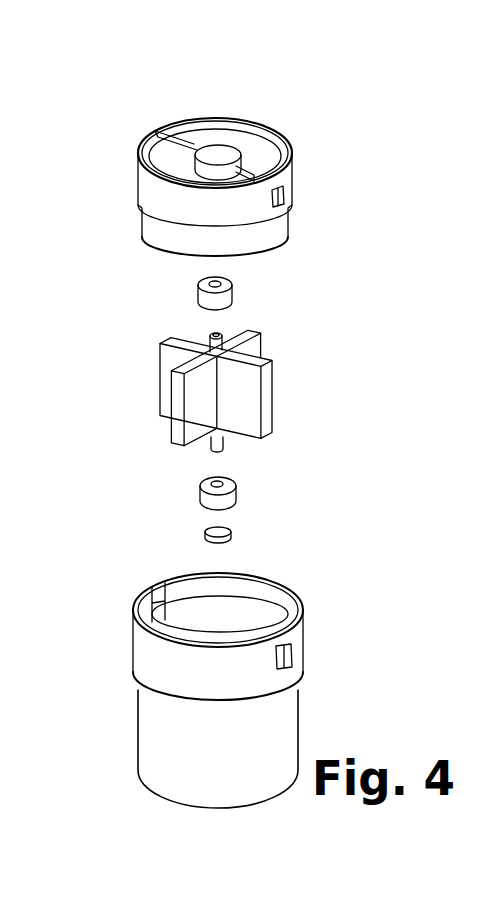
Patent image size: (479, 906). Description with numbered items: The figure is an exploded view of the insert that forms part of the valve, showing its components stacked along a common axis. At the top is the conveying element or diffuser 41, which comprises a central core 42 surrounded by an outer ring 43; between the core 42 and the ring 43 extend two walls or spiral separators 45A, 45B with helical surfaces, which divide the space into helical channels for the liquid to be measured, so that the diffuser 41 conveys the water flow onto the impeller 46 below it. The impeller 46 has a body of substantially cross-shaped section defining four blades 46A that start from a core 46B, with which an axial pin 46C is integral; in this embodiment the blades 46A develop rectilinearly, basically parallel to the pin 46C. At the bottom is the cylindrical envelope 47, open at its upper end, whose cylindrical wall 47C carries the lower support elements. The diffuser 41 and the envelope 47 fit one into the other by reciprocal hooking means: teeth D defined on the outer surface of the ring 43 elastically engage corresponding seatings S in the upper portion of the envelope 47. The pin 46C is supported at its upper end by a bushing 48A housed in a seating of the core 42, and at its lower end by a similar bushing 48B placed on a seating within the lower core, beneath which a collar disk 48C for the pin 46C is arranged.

The conveying element or diffuser 41 is at (227, 156).
The central core 42 is at (226, 148).
The outer ring 43 is at (138, 160).
The spiral separator 45A is at (172, 128).
The spiral separator 45B is at (247, 178).
The teeth D is at (287, 184).
The impeller 46 is at (224, 374).
The blades 46A is at (163, 362).
The core 46B is at (226, 372).
The axial pin 46C is at (207, 334).
The cylindrical envelope 47 is at (235, 689).
The cylindrical wall 47C is at (155, 724).
The bushing 48A is at (198, 293).
The bushing 48B is at (200, 497).
The collar disk 48C is at (232, 540).
The seatings S is at (158, 612).